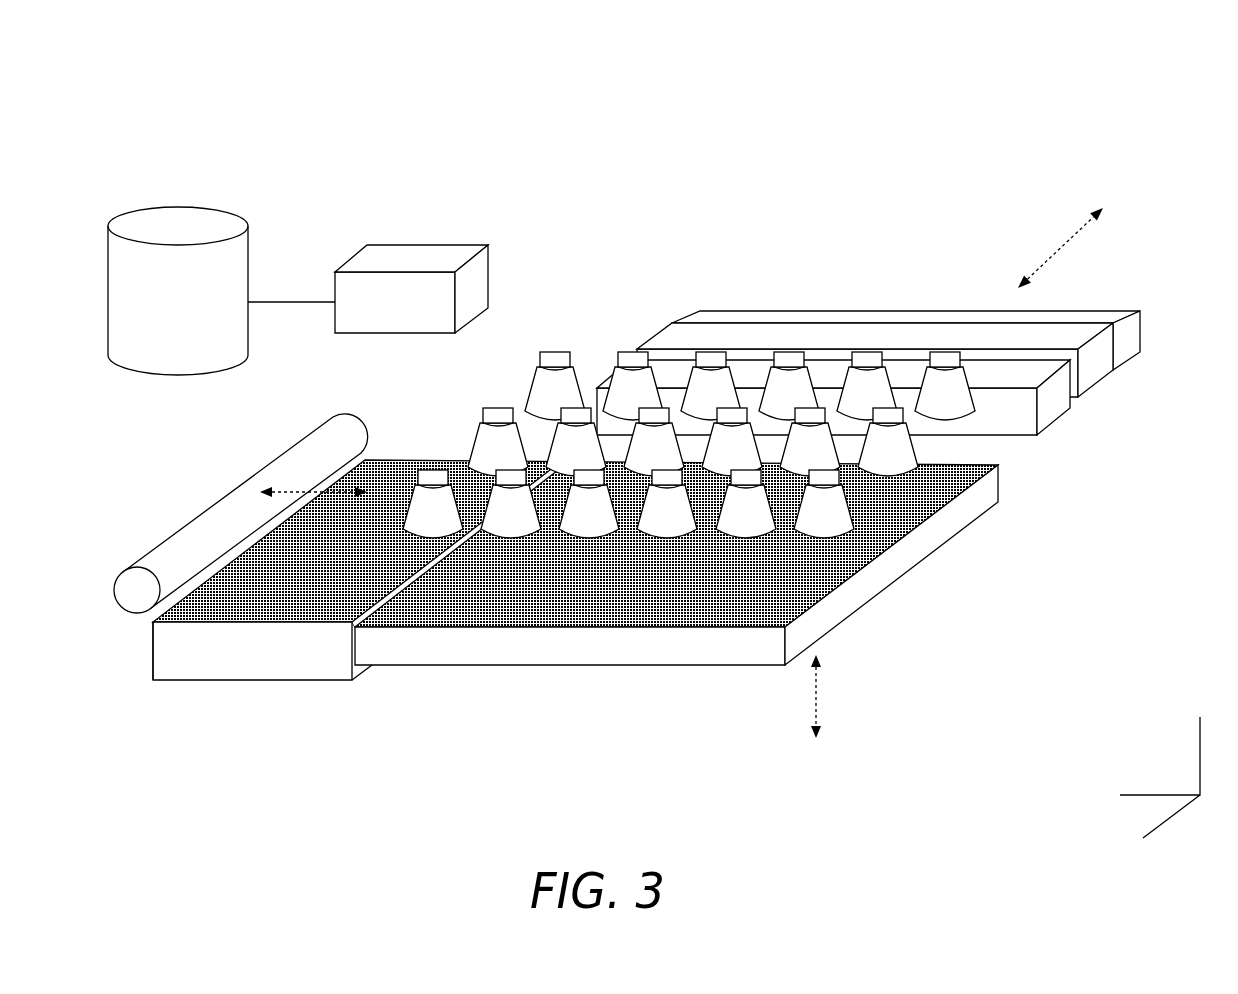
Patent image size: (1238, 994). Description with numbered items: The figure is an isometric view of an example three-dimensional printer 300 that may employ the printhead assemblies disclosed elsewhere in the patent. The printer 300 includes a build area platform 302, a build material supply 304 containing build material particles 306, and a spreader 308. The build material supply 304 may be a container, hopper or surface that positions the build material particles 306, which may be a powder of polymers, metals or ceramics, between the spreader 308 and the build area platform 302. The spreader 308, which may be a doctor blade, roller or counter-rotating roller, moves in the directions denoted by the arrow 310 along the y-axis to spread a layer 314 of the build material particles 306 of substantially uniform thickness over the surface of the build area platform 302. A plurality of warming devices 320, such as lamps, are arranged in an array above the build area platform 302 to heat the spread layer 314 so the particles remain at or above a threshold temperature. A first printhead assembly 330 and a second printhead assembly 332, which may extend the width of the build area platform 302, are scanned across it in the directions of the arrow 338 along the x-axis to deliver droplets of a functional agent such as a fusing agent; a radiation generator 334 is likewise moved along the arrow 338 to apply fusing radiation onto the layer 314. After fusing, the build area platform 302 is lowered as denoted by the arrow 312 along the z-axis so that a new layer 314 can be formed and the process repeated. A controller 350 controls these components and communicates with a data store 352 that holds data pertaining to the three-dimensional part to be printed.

The 3D printer 300 is at (652, 449).
The build area platform 302 is at (575, 594).
The build material supply 304 is at (277, 682).
The build material particles 306 is at (183, 623).
The spreader 308 is at (171, 534).
The arrow 310 is at (313, 493).
The arrow 312 is at (818, 688).
The layer 314 is at (857, 573).
The warming devices 320 is at (558, 350).
The first printhead assembly 330 is at (1057, 419).
The second printhead assembly 332 is at (1098, 382).
The radiation generator 334 is at (1140, 313).
The arrow 338 is at (1057, 250).
The controller 350 is at (392, 243).
The data store 352 is at (200, 322).